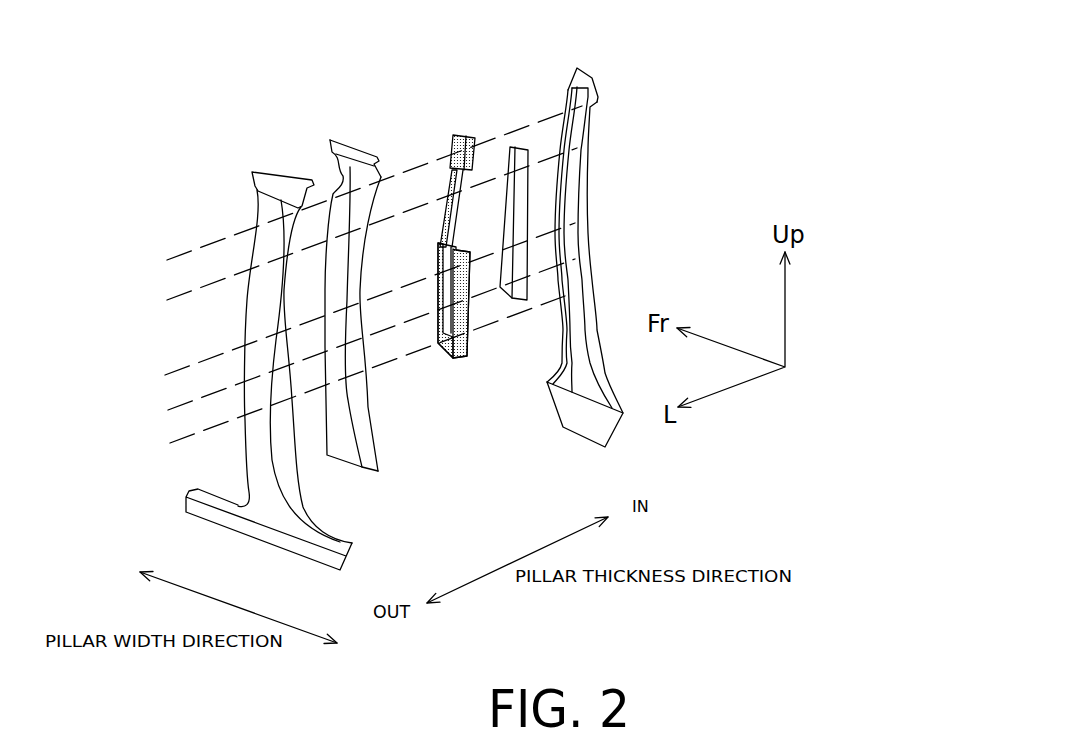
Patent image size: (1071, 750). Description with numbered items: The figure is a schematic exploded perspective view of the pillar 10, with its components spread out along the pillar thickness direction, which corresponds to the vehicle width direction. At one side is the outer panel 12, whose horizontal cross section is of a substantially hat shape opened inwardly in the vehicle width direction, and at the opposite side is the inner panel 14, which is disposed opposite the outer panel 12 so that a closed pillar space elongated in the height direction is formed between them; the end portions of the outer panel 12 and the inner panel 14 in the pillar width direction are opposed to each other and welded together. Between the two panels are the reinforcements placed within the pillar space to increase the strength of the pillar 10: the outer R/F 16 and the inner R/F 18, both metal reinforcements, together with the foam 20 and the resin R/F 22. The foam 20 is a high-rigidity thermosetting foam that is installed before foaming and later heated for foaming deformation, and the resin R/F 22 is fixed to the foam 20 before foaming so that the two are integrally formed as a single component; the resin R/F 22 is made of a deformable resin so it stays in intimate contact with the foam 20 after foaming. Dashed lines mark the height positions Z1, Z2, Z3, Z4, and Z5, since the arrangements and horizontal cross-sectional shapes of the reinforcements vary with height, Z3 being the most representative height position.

The pillar 10 is at (217, 191).
The outer panel 12 is at (272, 177).
The inner panel 14 is at (577, 68).
The outer R/F 16 is at (347, 139).
The inner R/F 18 is at (518, 145).
The foam 20 is at (453, 134).
The resin R/F 22 is at (440, 322).
The height position Z1 is at (357, 193).
The height position Z2 is at (355, 233).
The height position Z3 is at (354, 309).
The height position Z4 is at (354, 345).
The height position Z5 is at (349, 381).